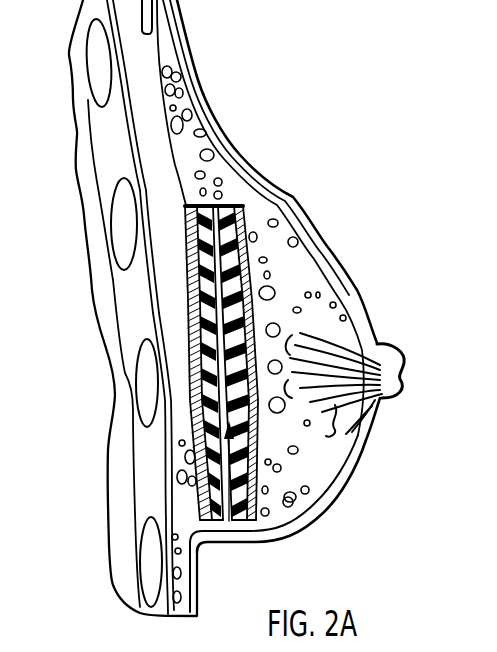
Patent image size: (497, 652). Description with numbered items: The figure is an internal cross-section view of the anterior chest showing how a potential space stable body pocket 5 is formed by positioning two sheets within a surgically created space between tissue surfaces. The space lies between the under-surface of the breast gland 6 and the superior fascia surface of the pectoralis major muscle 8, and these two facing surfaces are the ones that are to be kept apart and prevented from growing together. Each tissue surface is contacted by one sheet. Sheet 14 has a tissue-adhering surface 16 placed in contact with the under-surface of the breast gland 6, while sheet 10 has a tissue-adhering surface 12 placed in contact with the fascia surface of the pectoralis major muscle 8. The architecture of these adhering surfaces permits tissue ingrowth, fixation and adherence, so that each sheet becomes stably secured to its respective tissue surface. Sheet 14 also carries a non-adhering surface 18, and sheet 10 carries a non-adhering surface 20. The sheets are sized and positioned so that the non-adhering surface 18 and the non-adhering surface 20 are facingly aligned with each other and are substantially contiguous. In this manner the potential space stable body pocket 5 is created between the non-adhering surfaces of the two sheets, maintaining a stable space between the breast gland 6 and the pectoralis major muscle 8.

The potential space stable body pocket 5 is at (222, 524).
The breast gland 6 is at (302, 277).
The pectoralis major muscle 8 is at (167, 277).
The sheet 10 is at (196, 207).
The tissue-adhering surface 12 is at (185, 234).
The sheet 14 is at (233, 206).
The tissue-adhering surface 16 is at (298, 448).
The non-adhering surface 18 is at (252, 257).
The non-adhering surface 20 is at (186, 353).